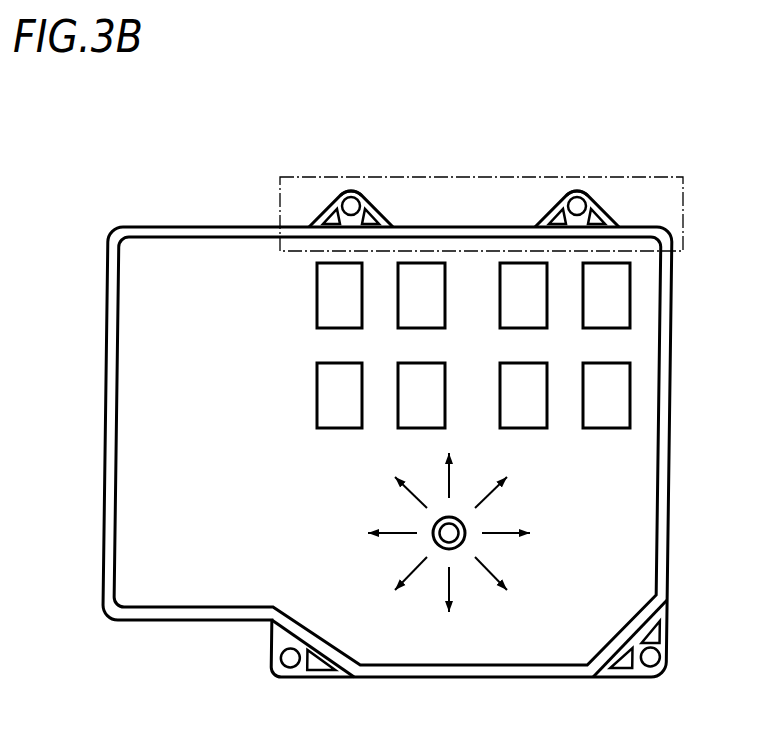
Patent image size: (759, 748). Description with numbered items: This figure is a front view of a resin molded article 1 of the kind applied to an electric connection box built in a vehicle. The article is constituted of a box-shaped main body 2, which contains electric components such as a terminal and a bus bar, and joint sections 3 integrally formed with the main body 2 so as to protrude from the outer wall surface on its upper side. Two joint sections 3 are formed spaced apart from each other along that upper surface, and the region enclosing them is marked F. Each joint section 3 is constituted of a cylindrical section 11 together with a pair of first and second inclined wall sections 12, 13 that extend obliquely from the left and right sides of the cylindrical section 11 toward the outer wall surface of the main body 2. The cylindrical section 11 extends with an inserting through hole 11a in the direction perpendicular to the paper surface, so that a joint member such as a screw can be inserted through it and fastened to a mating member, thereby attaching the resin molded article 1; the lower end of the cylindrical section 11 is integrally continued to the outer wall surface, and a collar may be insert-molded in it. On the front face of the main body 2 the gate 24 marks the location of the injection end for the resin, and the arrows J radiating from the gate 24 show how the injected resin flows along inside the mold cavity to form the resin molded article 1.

The resin molded article 1 is at (165, 187).
The main body 2 is at (645, 500).
The joint section 3 is at (375, 194).
The cylindrical section 11 is at (350, 196).
The inserting through hole 11a is at (346, 195).
The first inclined wall section 12 is at (317, 214).
The second inclined wall section 13 is at (388, 219).
The gate 24 is at (461, 542).
The arrow J is at (410, 490).
The region F is at (683, 212).